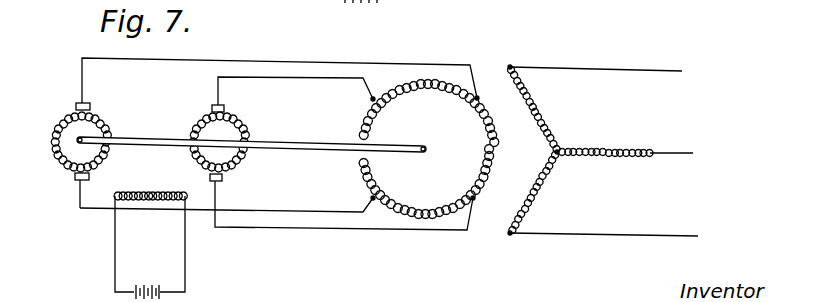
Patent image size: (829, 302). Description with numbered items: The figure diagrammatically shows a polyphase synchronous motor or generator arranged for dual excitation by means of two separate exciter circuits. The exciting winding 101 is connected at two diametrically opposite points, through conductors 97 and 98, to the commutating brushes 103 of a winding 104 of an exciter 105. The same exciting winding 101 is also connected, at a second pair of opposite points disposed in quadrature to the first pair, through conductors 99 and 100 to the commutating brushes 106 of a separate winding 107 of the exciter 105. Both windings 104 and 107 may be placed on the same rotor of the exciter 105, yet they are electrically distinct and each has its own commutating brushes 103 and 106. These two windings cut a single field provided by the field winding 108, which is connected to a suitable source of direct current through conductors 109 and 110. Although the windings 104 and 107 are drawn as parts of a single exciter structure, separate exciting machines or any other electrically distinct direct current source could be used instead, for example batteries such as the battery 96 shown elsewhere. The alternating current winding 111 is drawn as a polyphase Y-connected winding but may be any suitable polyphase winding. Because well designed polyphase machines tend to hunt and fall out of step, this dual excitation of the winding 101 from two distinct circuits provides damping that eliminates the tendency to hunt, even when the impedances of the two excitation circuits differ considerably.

The battery 96 is at (327, 0).
The conductor 97 is at (97, 209).
The conductor 98 is at (300, 62).
The conductor 99 is at (308, 230).
The conductor 100 is at (322, 79).
The exciting winding 101 is at (435, 83).
The commutating brushes 103 is at (76, 105).
The winding 104 is at (104, 118).
The exciter 105 is at (78, 197).
The commutating brushes 106 is at (224, 108).
The winding 107 is at (240, 160).
The field winding 108 is at (165, 178).
The conductor 109 is at (115, 258).
The conductor 110 is at (185, 272).
The alternating current winding 111 is at (535, 108).